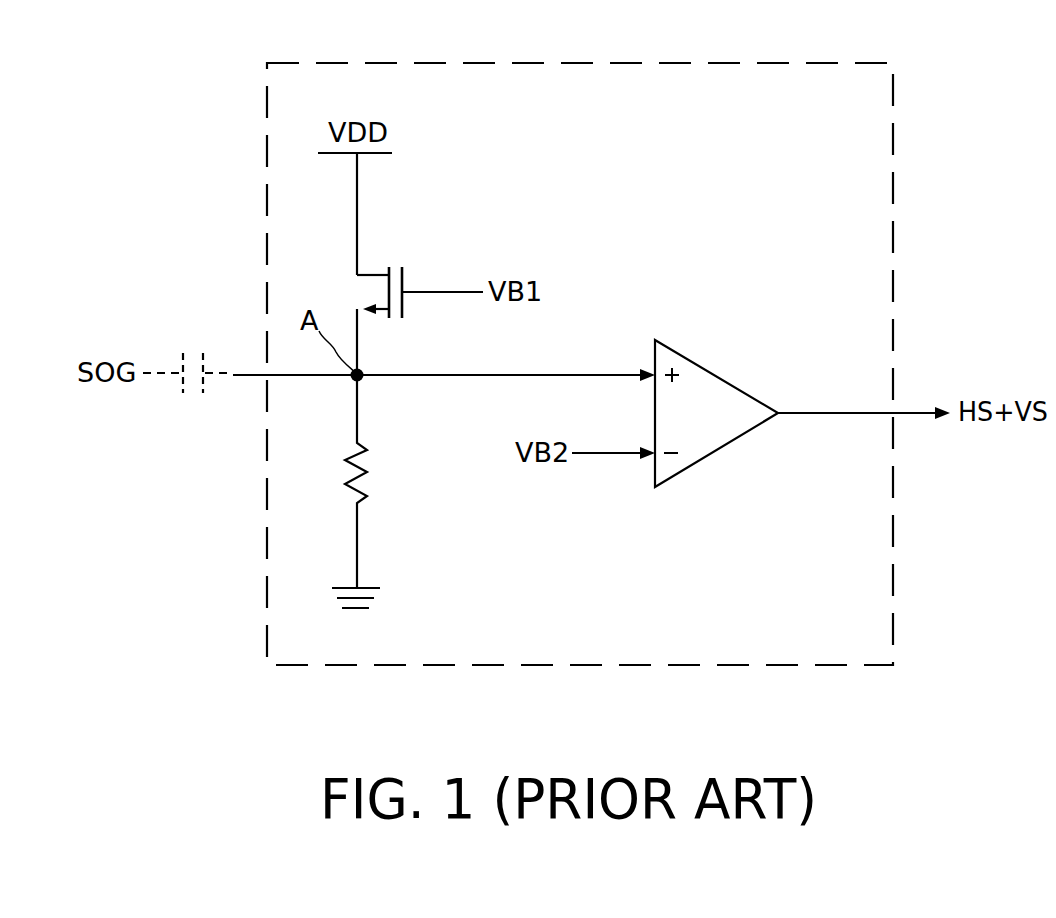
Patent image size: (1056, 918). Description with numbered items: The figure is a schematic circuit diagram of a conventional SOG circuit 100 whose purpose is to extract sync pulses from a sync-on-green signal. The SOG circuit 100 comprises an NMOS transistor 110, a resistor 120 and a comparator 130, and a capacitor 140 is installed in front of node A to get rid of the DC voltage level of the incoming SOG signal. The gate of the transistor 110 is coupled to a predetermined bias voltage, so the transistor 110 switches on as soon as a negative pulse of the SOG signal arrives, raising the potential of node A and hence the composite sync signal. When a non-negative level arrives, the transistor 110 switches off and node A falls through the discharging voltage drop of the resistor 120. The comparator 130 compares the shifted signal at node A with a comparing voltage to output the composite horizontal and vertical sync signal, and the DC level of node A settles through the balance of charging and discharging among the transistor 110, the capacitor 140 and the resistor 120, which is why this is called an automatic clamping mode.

The SOG circuit 100 is at (893, 667).
The NMOS transistor 110 is at (404, 286).
The resistor 120 is at (366, 491).
The comparator 130 is at (733, 391).
The capacitor 140 is at (205, 369).